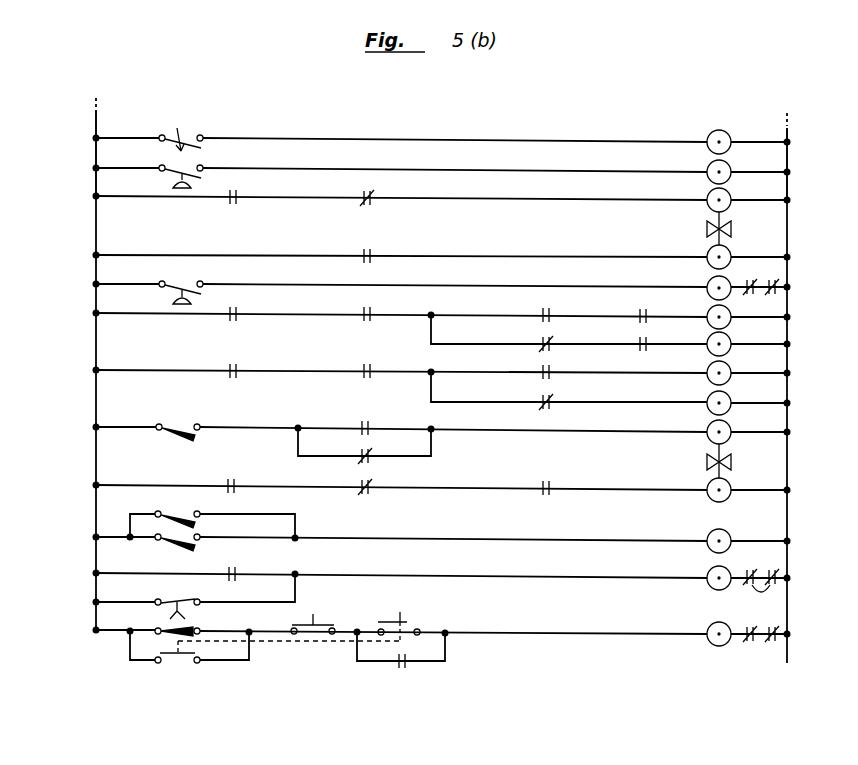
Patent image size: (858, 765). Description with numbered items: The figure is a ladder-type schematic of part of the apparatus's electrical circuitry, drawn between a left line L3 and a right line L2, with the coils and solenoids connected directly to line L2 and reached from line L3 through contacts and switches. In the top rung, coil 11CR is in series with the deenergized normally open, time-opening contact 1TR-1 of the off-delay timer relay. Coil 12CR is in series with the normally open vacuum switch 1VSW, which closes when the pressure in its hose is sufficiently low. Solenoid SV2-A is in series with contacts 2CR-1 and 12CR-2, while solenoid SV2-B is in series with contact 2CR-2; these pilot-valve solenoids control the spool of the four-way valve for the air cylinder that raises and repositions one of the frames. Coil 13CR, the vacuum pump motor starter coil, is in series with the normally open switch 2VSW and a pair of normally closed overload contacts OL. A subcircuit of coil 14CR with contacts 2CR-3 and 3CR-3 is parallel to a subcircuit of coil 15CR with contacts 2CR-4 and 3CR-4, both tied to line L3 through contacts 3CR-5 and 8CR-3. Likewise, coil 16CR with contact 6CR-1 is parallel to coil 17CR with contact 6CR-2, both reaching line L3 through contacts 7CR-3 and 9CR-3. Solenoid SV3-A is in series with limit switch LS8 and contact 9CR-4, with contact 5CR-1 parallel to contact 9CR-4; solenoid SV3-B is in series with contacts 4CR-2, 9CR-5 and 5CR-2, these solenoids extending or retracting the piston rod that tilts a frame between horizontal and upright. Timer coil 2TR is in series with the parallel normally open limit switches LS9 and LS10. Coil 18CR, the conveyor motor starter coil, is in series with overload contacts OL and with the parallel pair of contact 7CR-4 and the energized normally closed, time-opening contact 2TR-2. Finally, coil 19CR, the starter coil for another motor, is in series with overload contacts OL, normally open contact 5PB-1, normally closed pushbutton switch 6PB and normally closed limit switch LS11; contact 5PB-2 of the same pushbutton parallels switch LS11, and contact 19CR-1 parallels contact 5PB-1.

The electrical line L3 is at (94, 122).
The electrical line L2 is at (795, 162).
The time-opening contact 1TR-1 is at (176, 129).
The vacuum switch 1VSW is at (172, 165).
The contact 12CR-2 is at (233, 197).
The contact 2CR-1 is at (375, 197).
The contact 2CR-2 is at (375, 257).
The switch 2VSW is at (172, 281).
The contact 3CR-5 is at (239, 314).
The contact 8CR-3 is at (371, 314).
The contact 2CR-3 is at (543, 311).
The contact 3CR-3 is at (645, 311).
The contact 2CR-4 is at (543, 340).
The contact 3CR-4 is at (645, 340).
The contact 7CR-3 is at (227, 365).
The contact 9CR-3 is at (364, 366).
The contact 6CR-1 is at (552, 370).
The contact 6CR-2 is at (552, 400).
The limit switch LS8 is at (172, 422).
The contact 9CR-4 is at (363, 422).
The contact 5CR-1 is at (360, 450).
The contact 4CR-2 is at (235, 485).
The contact 9CR-5 is at (371, 486).
The contact 5CR-2 is at (538, 482).
The limit switch LS9 is at (181, 510).
The limit switch LS10 is at (182, 550).
The contact 7CR-4 is at (229, 573).
The time-opening contact 2TR-2 is at (180, 598).
The limit switch LS11 is at (188, 622).
The pushbutton switch 6PB is at (316, 612).
The contact 5PB-1 is at (412, 621).
The contact 5PB-2 is at (174, 666).
The contact 19CR-1 is at (403, 668).
The relay coil 11CR is at (722, 132).
The relay coil 12CR is at (722, 164).
The solenoid SV2-A is at (723, 193).
The solenoid SV2-B is at (723, 251).
The starter coil relay coil 13CR is at (708, 283).
The overload contacts OL is at (771, 279).
The relay coil 14CR is at (722, 315).
The relay coil 15CR is at (722, 342).
The relay coil 16CR is at (722, 370).
The relay coil 17CR is at (722, 400).
The solenoid SV3-A is at (723, 426).
The solenoid SV3-B is at (723, 484).
The timer relay coil 2TR is at (724, 536).
The motor starter coil relay coil 18CR is at (710, 571).
The starter coil relay coil 19CR is at (710, 649).